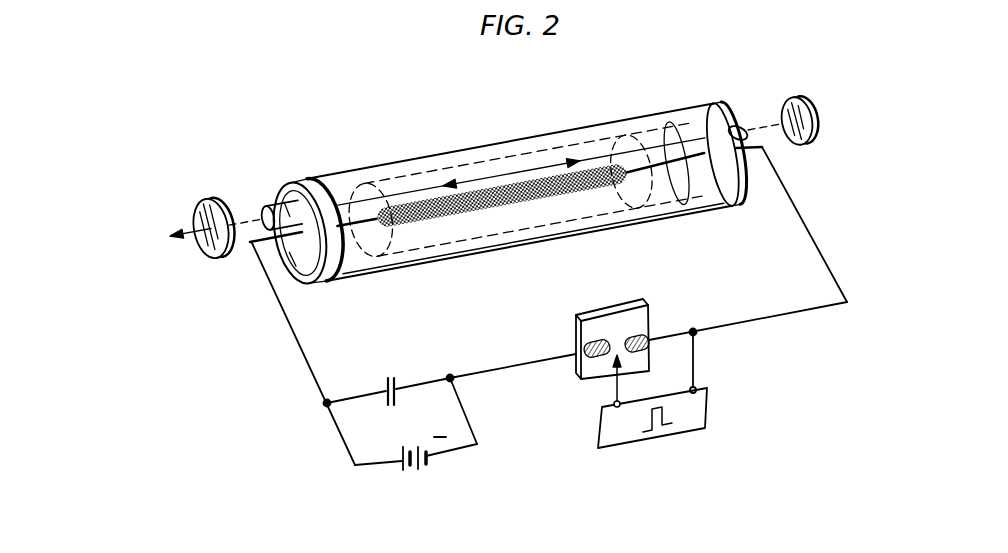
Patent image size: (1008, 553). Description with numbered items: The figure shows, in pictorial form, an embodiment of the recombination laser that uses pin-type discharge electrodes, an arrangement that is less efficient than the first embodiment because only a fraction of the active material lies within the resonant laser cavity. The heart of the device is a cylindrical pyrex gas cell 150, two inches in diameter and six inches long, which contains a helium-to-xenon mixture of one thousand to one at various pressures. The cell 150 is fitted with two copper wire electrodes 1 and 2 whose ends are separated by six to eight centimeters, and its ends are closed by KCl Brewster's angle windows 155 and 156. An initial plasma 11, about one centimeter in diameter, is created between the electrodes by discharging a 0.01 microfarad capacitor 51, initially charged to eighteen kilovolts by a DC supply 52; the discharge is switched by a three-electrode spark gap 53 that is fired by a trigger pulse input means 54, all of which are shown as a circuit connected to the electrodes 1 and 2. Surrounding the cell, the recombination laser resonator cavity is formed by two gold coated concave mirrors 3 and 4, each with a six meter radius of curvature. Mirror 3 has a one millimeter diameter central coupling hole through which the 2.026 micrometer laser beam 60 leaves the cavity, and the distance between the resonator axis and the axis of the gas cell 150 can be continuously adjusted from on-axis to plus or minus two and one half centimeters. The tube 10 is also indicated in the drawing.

The copper wire electrode 1 is at (251, 248).
The copper wire electrode 2 is at (751, 148).
The gold coated concave mirror 3 is at (225, 204).
The gold coated concave mirror 4 is at (812, 106).
The laser tube 10 is at (406, 177).
The plasma 11 is at (477, 193).
The capacitor 51 is at (387, 388).
The DC supply 52 is at (418, 463).
The three-electrode spark gap 53 is at (618, 312).
The trigger pulse input means 54 is at (708, 402).
The laser beam 60 is at (186, 231).
The cylindrical pyrex gas cell 150 is at (643, 117).
The KCl Brewster's angle window 155 is at (268, 207).
The KCl Brewster's angle window 156 is at (737, 125).